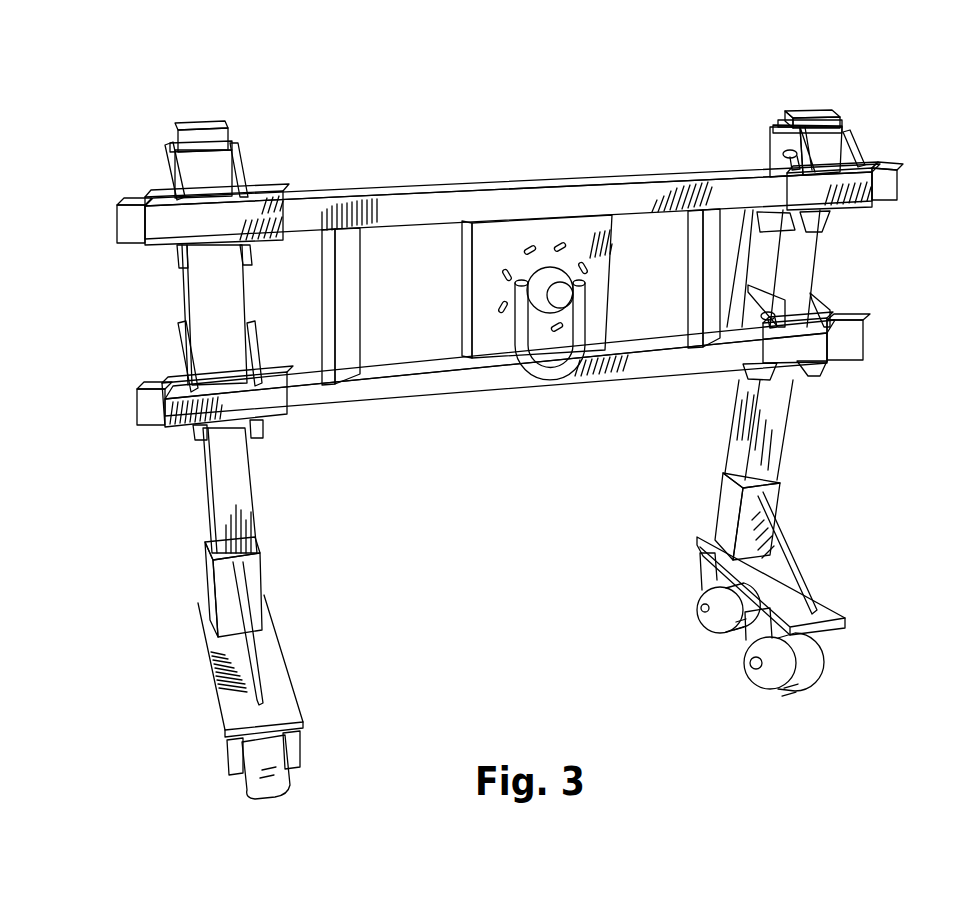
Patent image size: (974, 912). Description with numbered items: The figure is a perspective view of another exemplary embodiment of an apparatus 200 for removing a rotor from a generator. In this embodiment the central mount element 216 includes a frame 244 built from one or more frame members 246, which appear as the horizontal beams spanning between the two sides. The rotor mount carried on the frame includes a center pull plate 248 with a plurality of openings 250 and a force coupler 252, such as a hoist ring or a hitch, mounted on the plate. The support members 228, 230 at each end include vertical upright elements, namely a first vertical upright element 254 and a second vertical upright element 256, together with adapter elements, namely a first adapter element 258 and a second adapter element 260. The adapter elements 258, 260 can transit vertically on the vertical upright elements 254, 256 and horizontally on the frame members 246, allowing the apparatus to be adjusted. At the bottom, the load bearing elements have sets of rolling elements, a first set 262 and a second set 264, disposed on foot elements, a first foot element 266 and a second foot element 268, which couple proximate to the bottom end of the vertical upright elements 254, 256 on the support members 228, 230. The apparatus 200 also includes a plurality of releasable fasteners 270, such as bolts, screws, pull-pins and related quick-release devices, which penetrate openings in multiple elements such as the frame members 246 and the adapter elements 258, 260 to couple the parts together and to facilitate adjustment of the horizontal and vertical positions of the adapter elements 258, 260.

The apparatus 200 is at (502, 244).
The central mount element 216 is at (380, 148).
The support member 228 is at (812, 95).
The support member 230 is at (196, 118).
The frame 244 is at (445, 150).
The frame member 246 is at (220, 515).
The center pull plate 248 is at (500, 240).
The openings 250 is at (565, 245).
The force coupler 252 is at (560, 380).
The first vertical upright element 254 is at (775, 442).
The second vertical upright element 256 is at (197, 300).
The first adapter element 258 is at (867, 197).
The second adapter element 260 is at (162, 228).
The first set of rolling elements 262 is at (783, 712).
The second set of rolling elements 264 is at (228, 800).
The first foot element 266 is at (828, 608).
The second foot element 268 is at (285, 697).
The releasable fasteners 270 is at (790, 340).